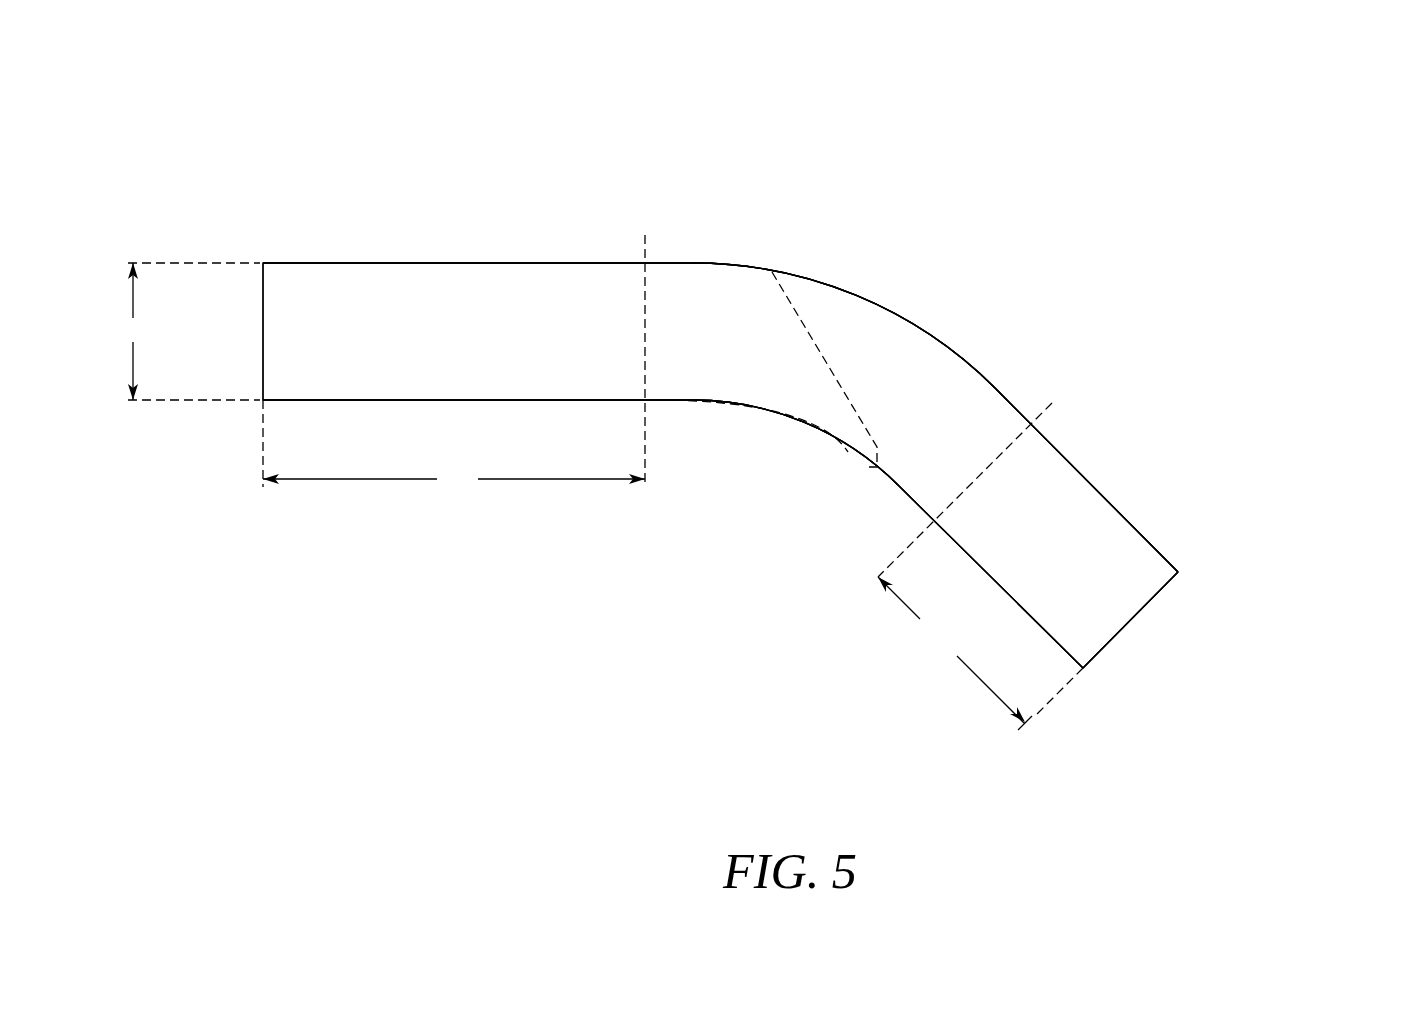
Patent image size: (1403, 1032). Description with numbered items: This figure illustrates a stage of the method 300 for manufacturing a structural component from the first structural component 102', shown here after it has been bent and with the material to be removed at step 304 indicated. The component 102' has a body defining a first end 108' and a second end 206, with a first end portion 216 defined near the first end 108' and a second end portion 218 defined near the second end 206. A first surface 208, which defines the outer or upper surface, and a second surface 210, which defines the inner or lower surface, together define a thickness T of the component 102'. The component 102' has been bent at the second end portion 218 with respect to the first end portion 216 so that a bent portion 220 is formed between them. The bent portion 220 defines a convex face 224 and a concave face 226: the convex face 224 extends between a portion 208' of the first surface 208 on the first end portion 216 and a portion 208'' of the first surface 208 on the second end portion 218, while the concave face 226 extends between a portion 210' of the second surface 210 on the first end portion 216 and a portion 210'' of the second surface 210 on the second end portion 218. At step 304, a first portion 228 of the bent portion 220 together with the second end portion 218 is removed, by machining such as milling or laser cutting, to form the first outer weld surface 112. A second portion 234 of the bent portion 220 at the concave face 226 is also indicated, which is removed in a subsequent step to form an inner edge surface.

The first structural component 102' is at (720, 414).
The method 300 is at (1296, 115).
The step 304 is at (1218, 203).
The first surface 208 is at (720, 376).
The portion of the first surface 208' is at (478, 215).
The portion of the first surface 208'' is at (1115, 480).
The second surface 210 is at (673, 534).
The portion of the second surface 210' is at (478, 431).
The portion of the second surface 210'' is at (990, 576).
The convex face 224 is at (968, 361).
The concave face 226 is at (822, 445).
The bent portion 220 is at (897, 294).
The first portion 228 is at (922, 372).
The first outer weld surface 112 is at (820, 358).
The second portion 234 is at (803, 420).
The second end 206 is at (1098, 670).
The first end 108' is at (195, 366).
The thickness T is at (133, 331).
The first end portion 216 is at (454, 364).
The second end portion 218 is at (980, 566).